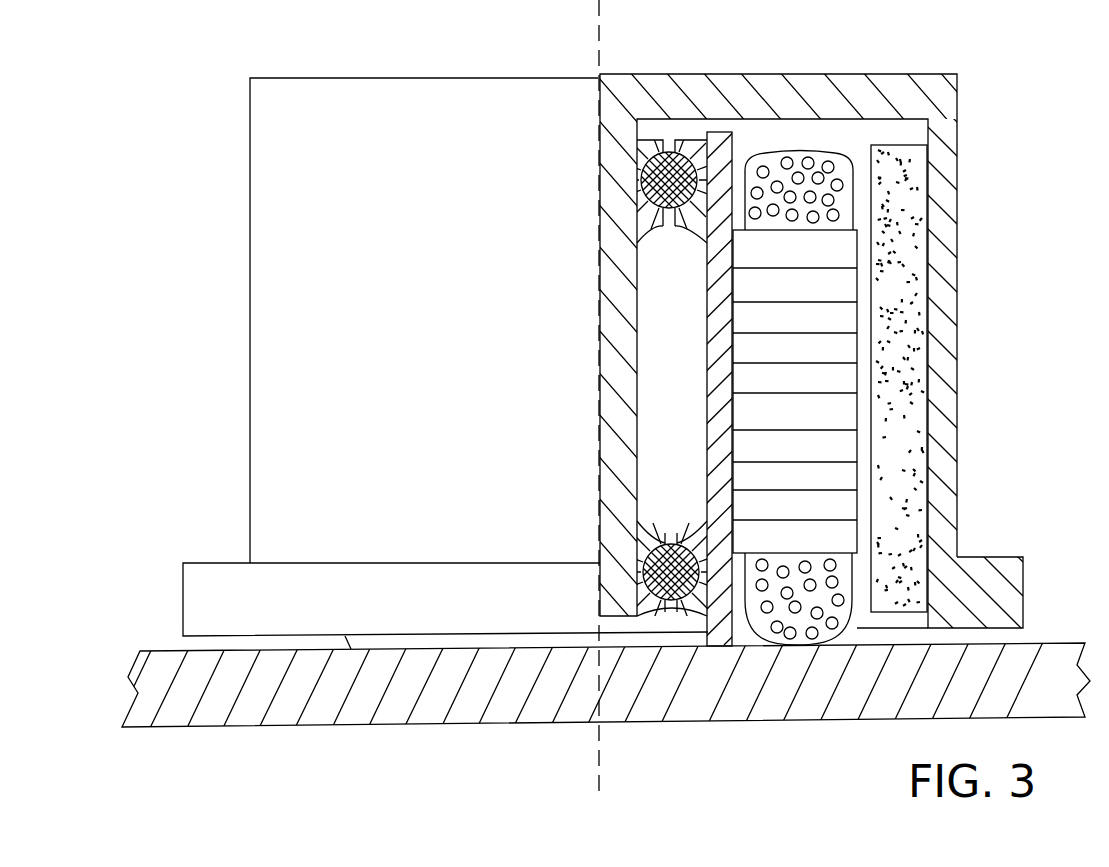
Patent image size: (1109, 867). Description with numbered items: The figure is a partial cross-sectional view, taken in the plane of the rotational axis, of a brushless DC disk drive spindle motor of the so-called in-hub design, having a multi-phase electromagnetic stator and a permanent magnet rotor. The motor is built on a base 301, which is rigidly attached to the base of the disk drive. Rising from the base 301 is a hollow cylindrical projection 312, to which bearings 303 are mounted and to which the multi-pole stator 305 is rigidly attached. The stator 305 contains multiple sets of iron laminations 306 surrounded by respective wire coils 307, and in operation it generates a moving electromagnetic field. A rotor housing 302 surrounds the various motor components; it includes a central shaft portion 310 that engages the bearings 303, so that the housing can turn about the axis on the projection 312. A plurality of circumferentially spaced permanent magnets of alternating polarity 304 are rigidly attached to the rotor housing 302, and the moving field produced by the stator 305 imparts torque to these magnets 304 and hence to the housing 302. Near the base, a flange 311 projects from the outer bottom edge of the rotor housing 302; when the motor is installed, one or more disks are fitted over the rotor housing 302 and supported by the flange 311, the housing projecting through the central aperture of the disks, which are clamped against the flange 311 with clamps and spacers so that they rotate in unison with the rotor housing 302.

The base 301 is at (980, 694).
The rotor housing 302 is at (900, 109).
The bearings 303 is at (650, 232).
The permanent magnets 304 is at (922, 192).
The multi-pole stator 305 is at (805, 143).
The iron laminations 306 is at (808, 424).
The wire coils 307 is at (770, 167).
The central shaft portion 310 is at (600, 303).
The flange 311 is at (993, 557).
The hollow cylindrical projection 312 is at (718, 608).